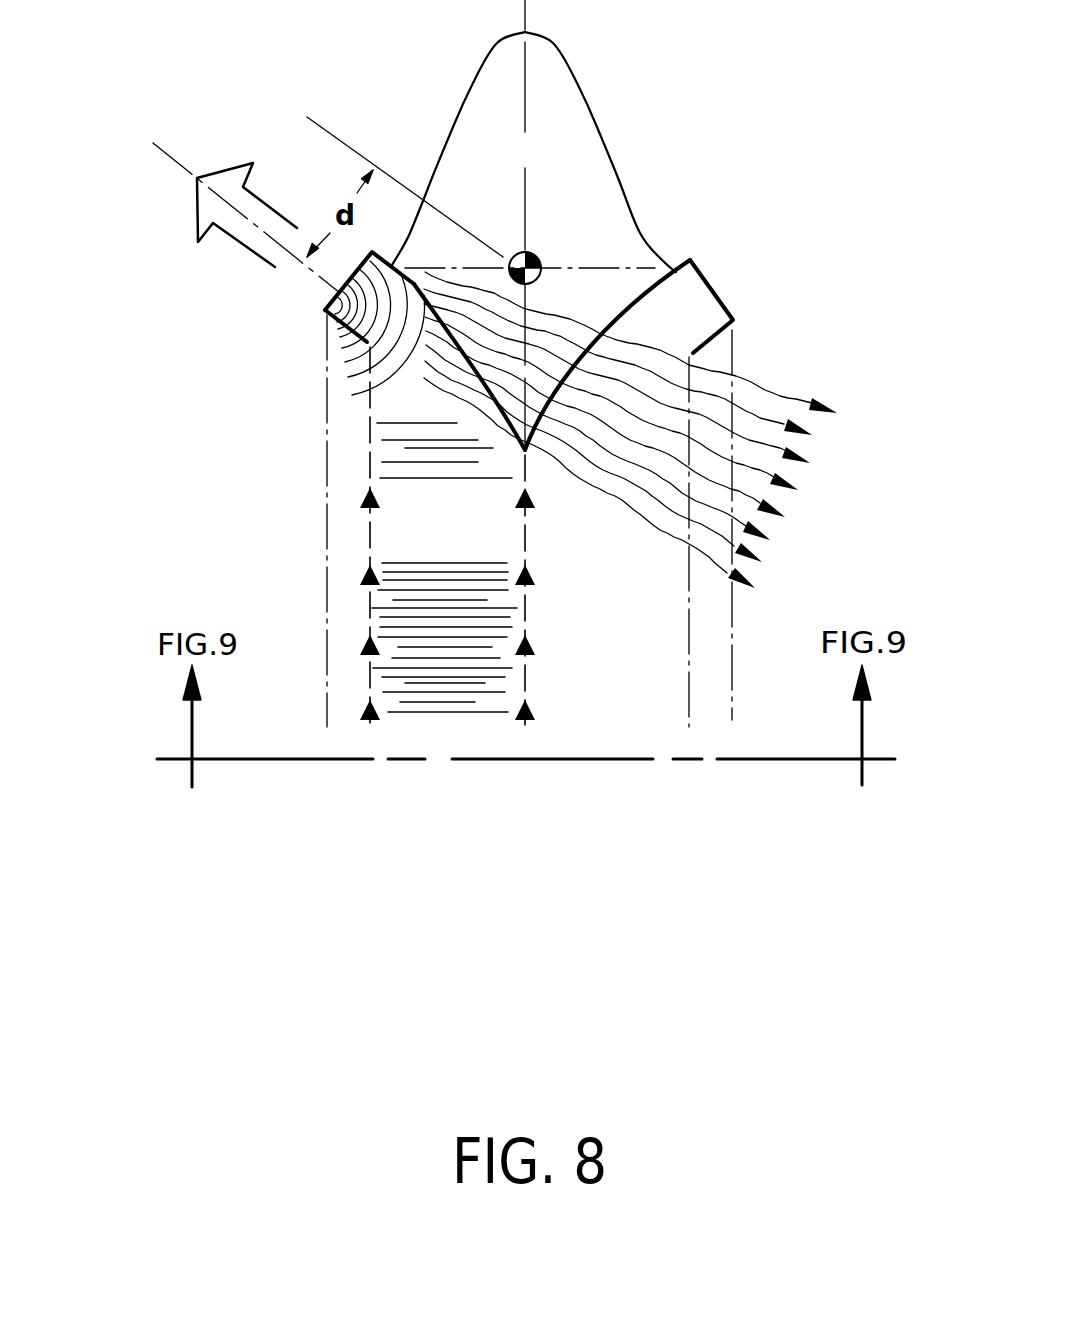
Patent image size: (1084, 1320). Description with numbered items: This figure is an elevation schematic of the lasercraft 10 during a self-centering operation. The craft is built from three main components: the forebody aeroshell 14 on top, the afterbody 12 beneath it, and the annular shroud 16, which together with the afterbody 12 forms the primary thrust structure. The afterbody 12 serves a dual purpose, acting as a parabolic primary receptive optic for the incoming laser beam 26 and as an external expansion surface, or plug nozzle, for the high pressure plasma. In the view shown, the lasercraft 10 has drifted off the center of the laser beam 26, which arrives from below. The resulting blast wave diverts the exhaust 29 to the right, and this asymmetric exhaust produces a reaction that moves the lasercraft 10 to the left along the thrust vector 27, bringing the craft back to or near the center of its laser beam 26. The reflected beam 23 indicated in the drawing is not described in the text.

The lasercraft 10 is at (682, 143).
The afterbody 12 is at (640, 306).
The forebody aeroshell 14 is at (578, 125).
The annular shroud 16 is at (325, 293).
The reflected laser beam 23 is at (333, 296).
The laser beam 26 is at (410, 590).
The thrust vector 27 is at (195, 222).
The exhaust 29 is at (760, 408).